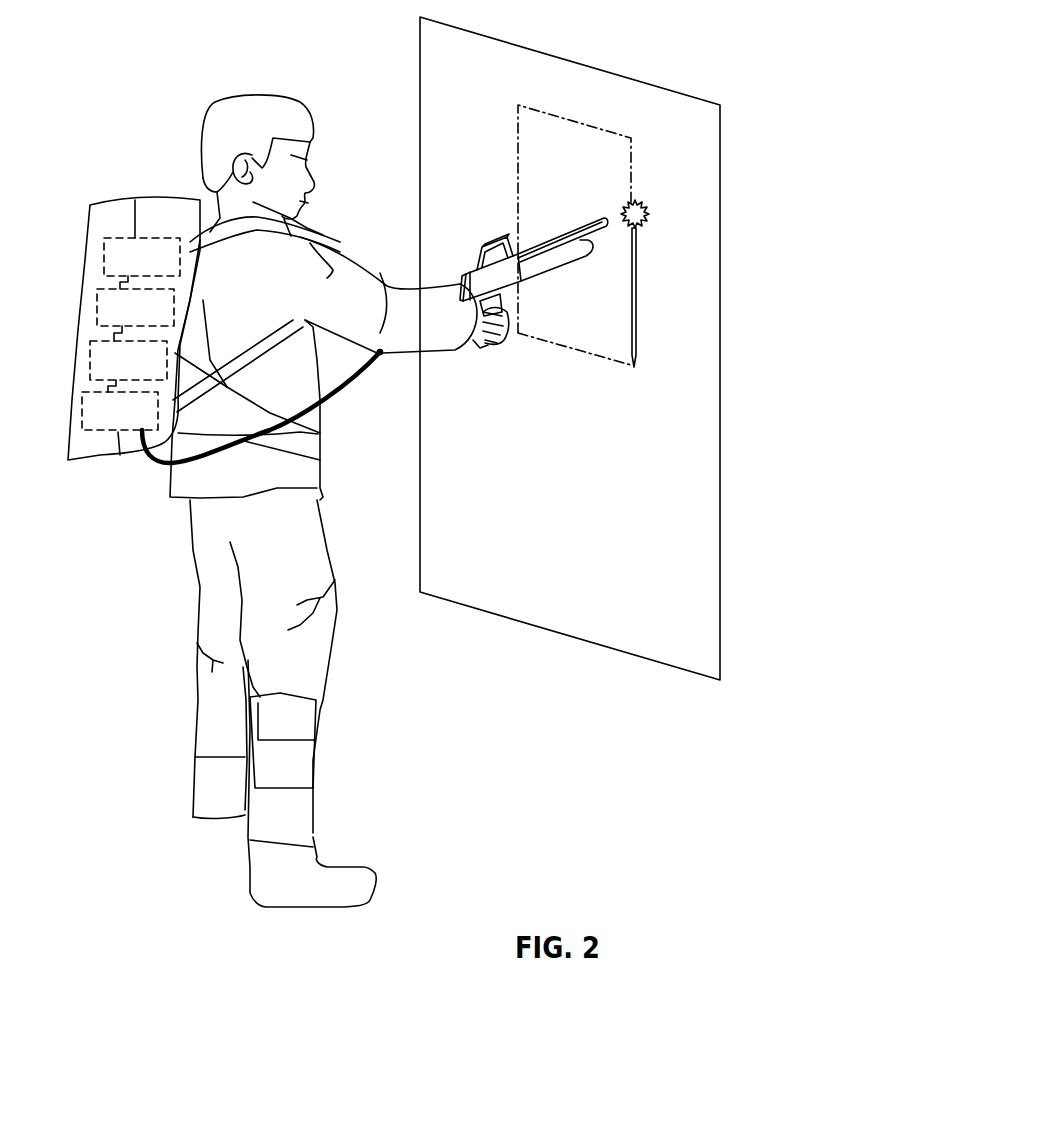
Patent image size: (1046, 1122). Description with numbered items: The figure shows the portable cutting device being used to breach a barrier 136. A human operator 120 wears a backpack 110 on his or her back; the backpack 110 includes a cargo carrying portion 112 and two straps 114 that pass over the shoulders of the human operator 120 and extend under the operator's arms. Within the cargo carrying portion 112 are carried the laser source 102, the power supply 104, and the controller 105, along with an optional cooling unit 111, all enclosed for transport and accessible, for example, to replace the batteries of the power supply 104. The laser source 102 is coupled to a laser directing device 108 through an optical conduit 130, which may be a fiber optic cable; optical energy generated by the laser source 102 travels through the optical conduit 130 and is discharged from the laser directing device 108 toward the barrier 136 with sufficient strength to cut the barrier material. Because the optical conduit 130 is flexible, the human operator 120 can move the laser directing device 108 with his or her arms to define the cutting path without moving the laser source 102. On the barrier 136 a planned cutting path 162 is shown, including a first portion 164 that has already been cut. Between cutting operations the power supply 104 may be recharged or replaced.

The backpack 110 is at (96, 153).
The cargo carrying portion 112 is at (82, 218).
The straps 114 is at (208, 234).
The controller 105 is at (142, 263).
The cooling unit 111 is at (135, 315).
The power supply 104 is at (128, 366).
The laser source 102 is at (120, 411).
The optical conduit 130 is at (174, 479).
The laser directing device 108 is at (454, 238).
The human operator 120 is at (358, 638).
The barrier 136 is at (570, 348).
The planned cutting path 162 is at (600, 107).
The first portion 164 is at (647, 285).